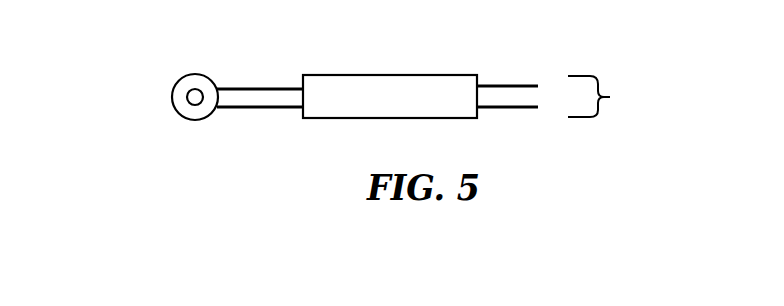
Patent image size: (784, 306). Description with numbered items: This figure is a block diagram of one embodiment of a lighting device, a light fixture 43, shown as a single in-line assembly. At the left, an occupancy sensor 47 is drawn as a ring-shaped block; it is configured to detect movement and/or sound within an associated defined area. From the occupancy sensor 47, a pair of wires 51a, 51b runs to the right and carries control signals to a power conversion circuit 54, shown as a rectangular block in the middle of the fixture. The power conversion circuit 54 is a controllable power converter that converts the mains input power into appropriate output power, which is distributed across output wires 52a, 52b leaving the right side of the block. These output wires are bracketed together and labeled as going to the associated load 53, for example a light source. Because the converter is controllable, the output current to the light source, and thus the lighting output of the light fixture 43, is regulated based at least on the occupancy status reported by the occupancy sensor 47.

The light fixture 43 is at (147, 135).
The occupancy sensor 47 is at (197, 74).
The wire 51a is at (272, 86).
The wire 51b is at (272, 110).
The output wire 52a is at (492, 83).
The output wire 52b is at (492, 109).
The load 53 is at (656, 83).
The power conversion circuit 54 is at (390, 74).